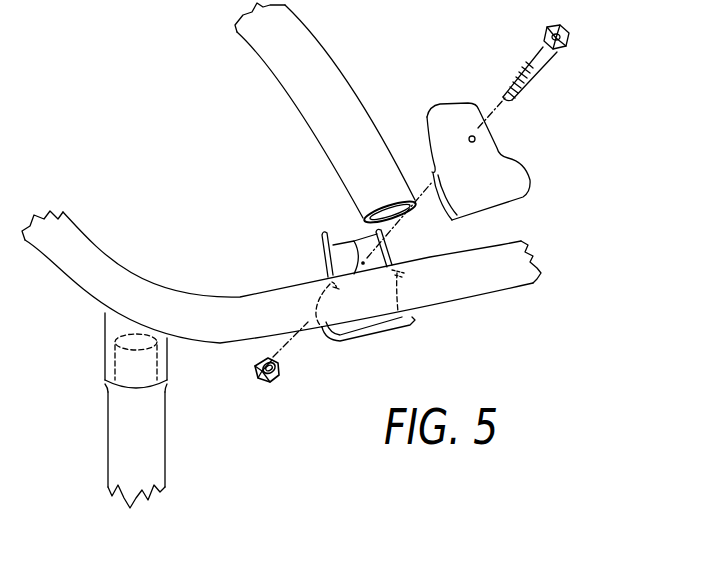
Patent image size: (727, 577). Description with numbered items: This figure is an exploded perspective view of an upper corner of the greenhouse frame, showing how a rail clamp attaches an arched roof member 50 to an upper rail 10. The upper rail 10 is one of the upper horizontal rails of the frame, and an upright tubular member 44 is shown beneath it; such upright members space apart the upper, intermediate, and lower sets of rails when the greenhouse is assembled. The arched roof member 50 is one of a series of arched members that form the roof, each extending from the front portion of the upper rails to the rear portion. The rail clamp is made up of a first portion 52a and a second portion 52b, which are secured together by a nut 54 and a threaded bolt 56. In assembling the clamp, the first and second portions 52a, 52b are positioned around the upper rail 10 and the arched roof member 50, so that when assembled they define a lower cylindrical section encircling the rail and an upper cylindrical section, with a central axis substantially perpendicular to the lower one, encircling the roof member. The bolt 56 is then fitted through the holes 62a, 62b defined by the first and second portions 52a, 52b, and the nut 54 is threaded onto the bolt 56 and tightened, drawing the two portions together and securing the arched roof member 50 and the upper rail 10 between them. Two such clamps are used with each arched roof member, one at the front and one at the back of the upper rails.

The upper rail 10 is at (518, 277).
The upright tubular member 44 is at (113, 432).
The arched roof member 50 is at (315, 45).
The first portion of rail clamp 52a is at (513, 159).
The second portion of rail clamp 52b is at (334, 261).
The nut 54 is at (279, 372).
The threaded bolt 56 is at (543, 57).
The hole in first clamp portion 62a is at (475, 138).
The hole in second clamp portion 62b is at (355, 242).